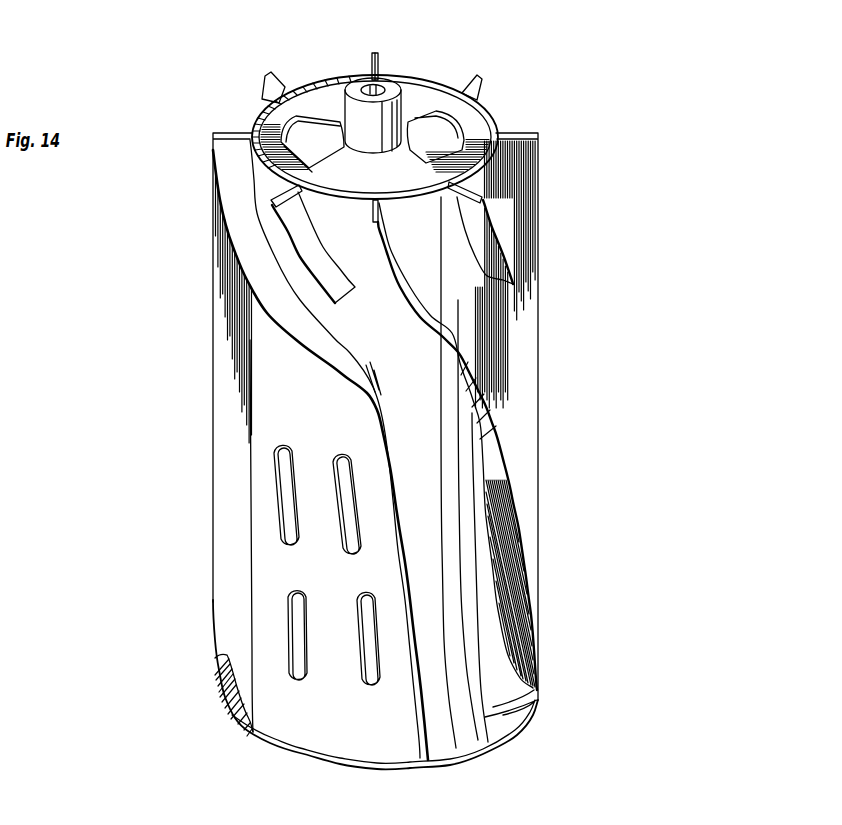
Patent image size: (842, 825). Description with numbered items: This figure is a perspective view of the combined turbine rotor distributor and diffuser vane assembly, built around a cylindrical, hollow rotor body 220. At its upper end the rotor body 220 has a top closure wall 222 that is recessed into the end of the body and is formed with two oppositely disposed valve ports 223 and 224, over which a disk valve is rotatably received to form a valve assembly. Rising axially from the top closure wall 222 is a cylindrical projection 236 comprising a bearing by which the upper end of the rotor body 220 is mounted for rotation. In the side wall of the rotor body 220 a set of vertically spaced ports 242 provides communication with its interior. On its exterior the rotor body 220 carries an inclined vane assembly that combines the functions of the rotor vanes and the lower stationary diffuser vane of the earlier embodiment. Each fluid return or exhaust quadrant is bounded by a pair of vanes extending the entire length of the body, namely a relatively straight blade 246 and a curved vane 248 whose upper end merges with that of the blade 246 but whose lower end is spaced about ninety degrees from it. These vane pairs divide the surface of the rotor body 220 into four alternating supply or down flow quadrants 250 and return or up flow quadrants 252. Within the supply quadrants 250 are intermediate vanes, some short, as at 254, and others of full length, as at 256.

The rotor body 220 is at (480, 347).
The top closure wall 222 is at (347, 181).
The valve port 223 is at (317, 113).
The valve port 224 is at (453, 122).
The cylindrical projection 236 is at (393, 88).
The ports 242 is at (298, 527).
The straight blade 246 is at (522, 255).
The curved vane 248 is at (362, 363).
The supply quadrant 250 is at (500, 720).
The return quadrant 252 is at (308, 743).
The short intermediate vane 254 is at (268, 87).
The full length intermediate vane 256 is at (372, 74).